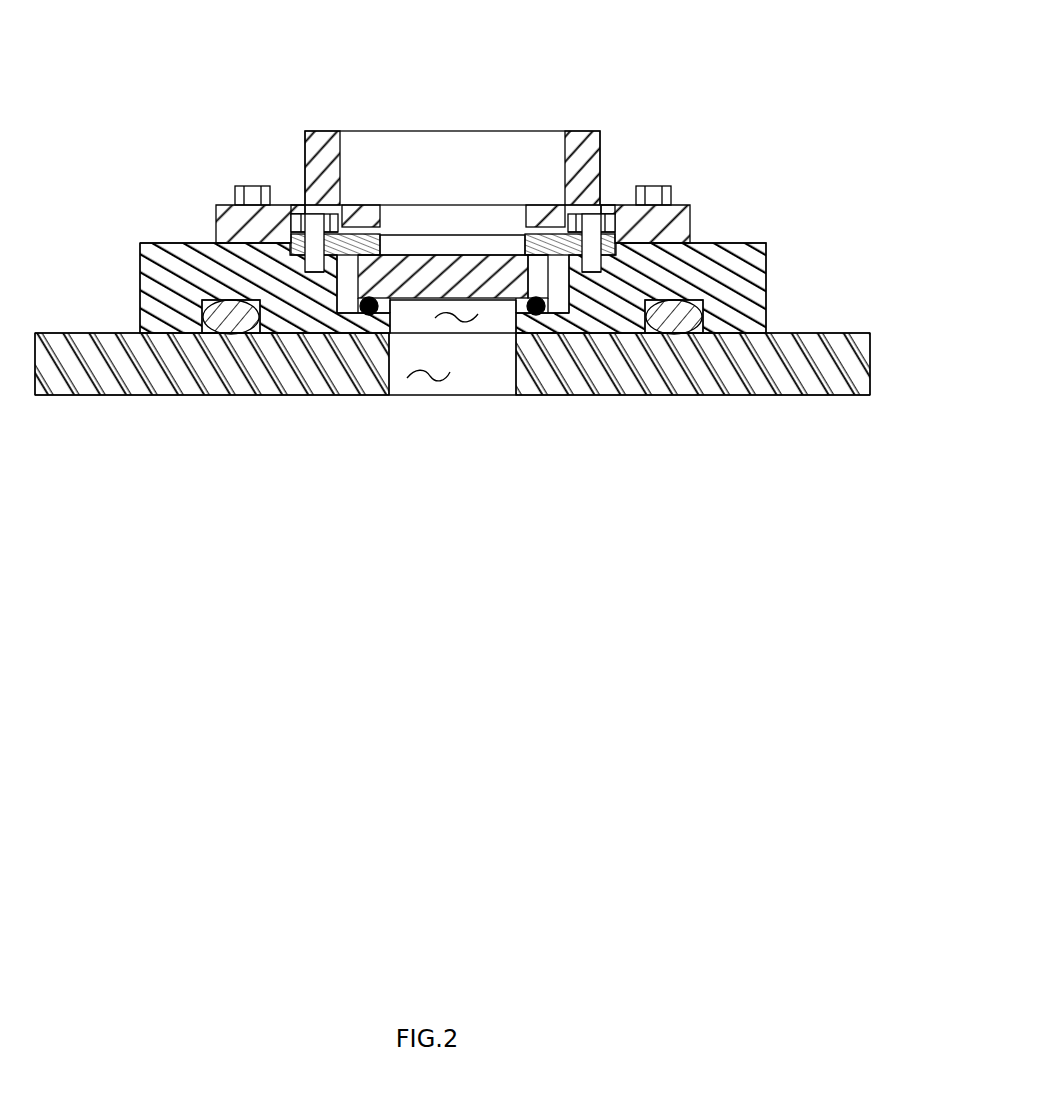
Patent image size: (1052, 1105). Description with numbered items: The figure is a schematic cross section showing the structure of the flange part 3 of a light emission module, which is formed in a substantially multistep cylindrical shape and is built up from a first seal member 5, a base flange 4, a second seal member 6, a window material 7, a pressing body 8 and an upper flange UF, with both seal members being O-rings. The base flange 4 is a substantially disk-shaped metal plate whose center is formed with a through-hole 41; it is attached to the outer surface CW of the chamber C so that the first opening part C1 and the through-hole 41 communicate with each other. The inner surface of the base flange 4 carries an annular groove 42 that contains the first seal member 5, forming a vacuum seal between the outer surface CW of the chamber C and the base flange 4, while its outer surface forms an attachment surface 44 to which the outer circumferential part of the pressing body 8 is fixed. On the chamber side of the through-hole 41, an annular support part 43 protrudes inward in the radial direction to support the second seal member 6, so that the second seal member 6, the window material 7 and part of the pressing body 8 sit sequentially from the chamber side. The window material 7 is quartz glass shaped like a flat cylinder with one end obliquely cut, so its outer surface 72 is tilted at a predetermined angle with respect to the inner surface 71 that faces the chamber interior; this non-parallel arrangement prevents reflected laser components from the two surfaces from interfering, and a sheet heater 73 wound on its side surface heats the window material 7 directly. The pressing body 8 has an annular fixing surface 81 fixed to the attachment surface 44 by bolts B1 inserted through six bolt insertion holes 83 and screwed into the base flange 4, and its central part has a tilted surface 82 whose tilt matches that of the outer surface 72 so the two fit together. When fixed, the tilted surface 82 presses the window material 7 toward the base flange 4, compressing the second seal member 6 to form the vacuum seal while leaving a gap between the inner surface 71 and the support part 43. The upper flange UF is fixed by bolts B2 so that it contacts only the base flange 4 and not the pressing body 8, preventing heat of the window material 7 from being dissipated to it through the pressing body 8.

The flange part 3 is at (643, 72).
The base flange 4 is at (780, 226).
The through-hole 41 is at (455, 312).
The annular groove 42 is at (694, 300).
The annular support part 43 is at (538, 316).
The attachment surface 44 is at (288, 238).
The first seal member 5 is at (203, 316).
The second seal member 6 is at (367, 315).
The window material 7 is at (423, 248).
The inner surface 71 is at (388, 316).
The outer surface 72 is at (455, 268).
The sheet heater 73 is at (300, 247).
The pressing body 8 is at (518, 218).
The fixing surface 81 is at (602, 272).
The tilted surface 82 is at (512, 300).
The bolt insertion holes 83 is at (312, 242).
The bolts B1 is at (312, 214).
The bolts B2 is at (253, 186).
The upper flange UF is at (330, 131).
The chamber C is at (858, 309).
The outer surface CW is at (815, 333).
The first opening part C1 is at (425, 396).